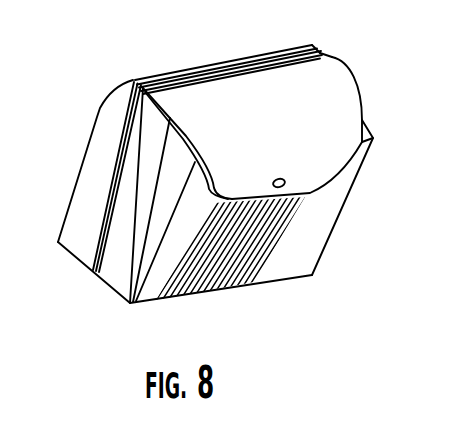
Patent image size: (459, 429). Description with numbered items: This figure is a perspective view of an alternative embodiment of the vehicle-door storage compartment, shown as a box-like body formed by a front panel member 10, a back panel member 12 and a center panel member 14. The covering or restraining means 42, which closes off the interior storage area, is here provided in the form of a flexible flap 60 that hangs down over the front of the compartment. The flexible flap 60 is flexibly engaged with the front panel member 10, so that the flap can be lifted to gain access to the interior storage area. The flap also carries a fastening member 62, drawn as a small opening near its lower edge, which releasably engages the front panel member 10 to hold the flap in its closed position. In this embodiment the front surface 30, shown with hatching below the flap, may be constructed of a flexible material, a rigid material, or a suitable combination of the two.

The front panel member 10 is at (110, 277).
The back panel member 12 is at (318, 56).
The center panel member 14 is at (98, 135).
The front surface 30 is at (297, 262).
The covering or restraining means 42 is at (327, 68).
The flexible flap 60 is at (337, 142).
The fastening member 62 is at (285, 186).